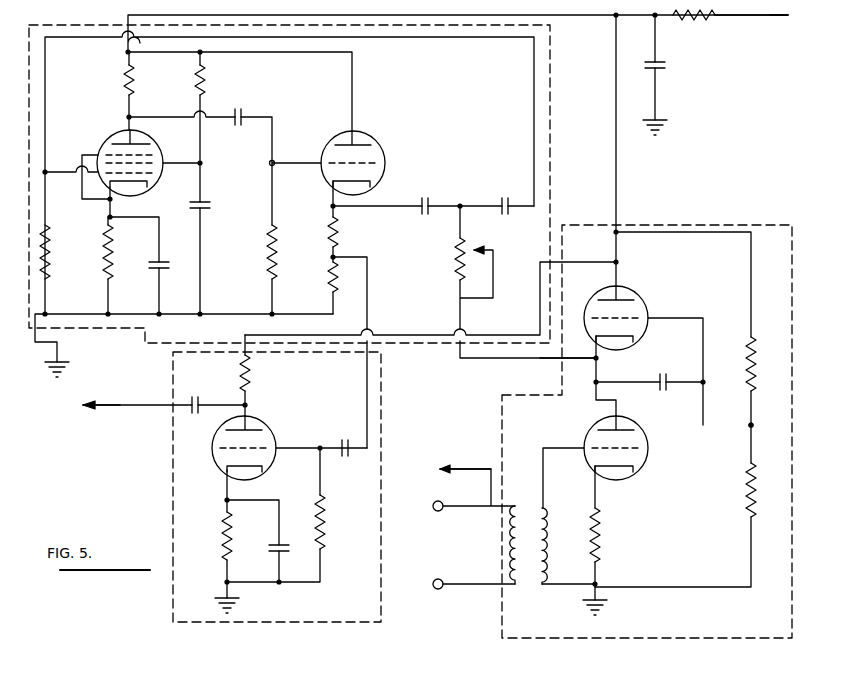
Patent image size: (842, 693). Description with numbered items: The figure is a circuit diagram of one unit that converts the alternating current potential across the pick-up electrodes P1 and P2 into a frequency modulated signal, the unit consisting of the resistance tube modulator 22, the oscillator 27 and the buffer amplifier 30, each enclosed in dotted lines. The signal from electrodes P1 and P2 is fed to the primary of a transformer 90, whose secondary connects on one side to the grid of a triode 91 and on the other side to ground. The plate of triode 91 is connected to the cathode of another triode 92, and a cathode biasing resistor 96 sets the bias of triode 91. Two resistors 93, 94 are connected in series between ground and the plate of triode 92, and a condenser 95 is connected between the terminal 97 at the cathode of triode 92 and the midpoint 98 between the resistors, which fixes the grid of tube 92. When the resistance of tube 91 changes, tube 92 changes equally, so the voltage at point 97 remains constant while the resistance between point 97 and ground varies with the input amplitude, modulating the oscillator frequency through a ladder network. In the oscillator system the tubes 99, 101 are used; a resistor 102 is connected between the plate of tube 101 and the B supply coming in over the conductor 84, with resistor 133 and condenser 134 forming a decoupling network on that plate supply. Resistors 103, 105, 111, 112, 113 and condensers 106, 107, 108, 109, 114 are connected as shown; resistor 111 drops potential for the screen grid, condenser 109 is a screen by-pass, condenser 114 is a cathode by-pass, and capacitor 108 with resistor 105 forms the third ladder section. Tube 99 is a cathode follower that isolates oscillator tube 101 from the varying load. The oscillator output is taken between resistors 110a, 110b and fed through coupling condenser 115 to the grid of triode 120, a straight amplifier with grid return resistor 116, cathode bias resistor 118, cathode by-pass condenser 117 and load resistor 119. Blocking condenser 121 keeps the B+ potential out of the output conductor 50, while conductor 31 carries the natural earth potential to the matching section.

The resistance tube modulator 22 is at (712, 638).
The oscillator 27 is at (550, 135).
The buffer amplifier 30 is at (320, 622).
The conductor 31 is at (454, 453).
The conductor 50 is at (114, 408).
The conductor 84 is at (735, 22).
The transformer 90 is at (518, 508).
The triode 91 is at (647, 450).
The triode 92 is at (644, 302).
The resistor 93 is at (755, 485).
The resistor 94 is at (755, 370).
The condenser 95 is at (660, 382).
The resistor 96 is at (599, 540).
The terminal 97 is at (592, 362).
The midpoint 98 is at (754, 425).
The tube 99 is at (376, 142).
The tube 101 is at (110, 135).
The resistor 102 is at (128, 73).
The resistor 103 is at (266, 257).
The resistor 105 is at (48, 259).
The condenser 106 is at (238, 108).
The condenser 107 is at (438, 188).
The condenser 108 is at (518, 188).
The condenser 109 is at (203, 204).
The resistor 110a is at (329, 232).
The resistor 110b is at (329, 286).
The resistor 111 is at (196, 80).
The resistor 112 is at (106, 271).
The resistor 113 is at (454, 260).
The condenser 114 is at (163, 262).
The condenser 115 is at (350, 456).
The resistor 116 is at (324, 505).
The condenser 117 is at (277, 545).
The resistor 118 is at (222, 540).
The resistor 119 is at (250, 382).
The triode 120 is at (268, 426).
The condenser 121 is at (200, 398).
The resistor 133 is at (692, 22).
The condenser 134 is at (660, 70).
The pick-up electrode P1 is at (432, 586).
The pick-up electrode P2 is at (432, 508).
The B supply B is at (788, 20).